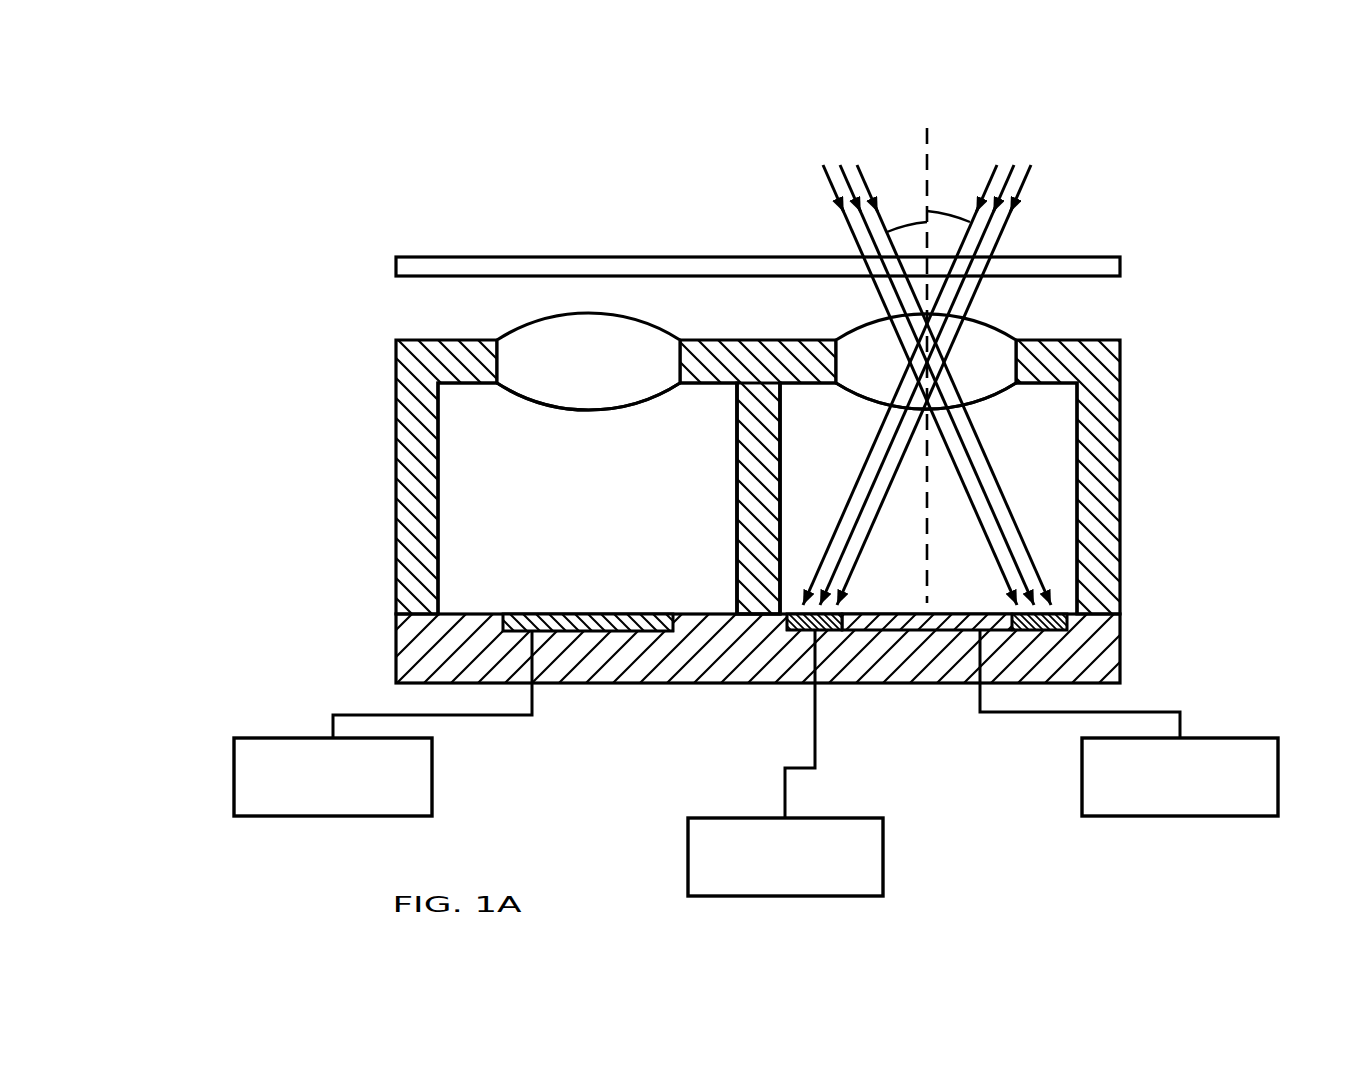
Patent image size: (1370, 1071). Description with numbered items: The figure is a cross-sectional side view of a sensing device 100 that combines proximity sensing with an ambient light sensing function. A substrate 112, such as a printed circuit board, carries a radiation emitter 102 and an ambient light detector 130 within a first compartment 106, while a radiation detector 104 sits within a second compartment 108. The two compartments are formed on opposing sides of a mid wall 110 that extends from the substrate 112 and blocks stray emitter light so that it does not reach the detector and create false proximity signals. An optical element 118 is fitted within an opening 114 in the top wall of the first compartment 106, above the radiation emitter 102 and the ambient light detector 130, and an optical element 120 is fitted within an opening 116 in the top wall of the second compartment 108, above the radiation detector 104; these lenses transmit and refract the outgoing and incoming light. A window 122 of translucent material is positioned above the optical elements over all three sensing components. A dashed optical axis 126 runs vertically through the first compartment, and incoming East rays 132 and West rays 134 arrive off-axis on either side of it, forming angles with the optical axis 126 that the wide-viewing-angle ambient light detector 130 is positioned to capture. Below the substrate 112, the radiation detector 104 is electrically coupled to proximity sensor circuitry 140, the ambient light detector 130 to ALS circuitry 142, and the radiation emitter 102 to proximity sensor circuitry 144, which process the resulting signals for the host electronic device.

The sensing device 100 is at (1250, 203).
The radiation emitter 102 is at (915, 632).
The radiation detector 104 is at (589, 632).
The first compartment 106 is at (1130, 525).
The second compartment 108 is at (390, 518).
The mid wall 110 is at (737, 462).
The substrate 112 is at (1120, 646).
The opening 114 is at (1006, 406).
The opening 116 is at (520, 406).
The optical element 118 is at (997, 323).
The optical element 120 is at (512, 333).
The window 122 is at (1062, 257).
The optical axis 126 is at (925, 136).
The ambient light detector 130 is at (802, 632).
The East rays 132 is at (1028, 174).
The West rays 134 is at (828, 186).
The proximity sensor circuitry 140 is at (234, 768).
The ALS circuitry 142 is at (688, 858).
The proximity sensor circuitry 144 is at (1280, 768).